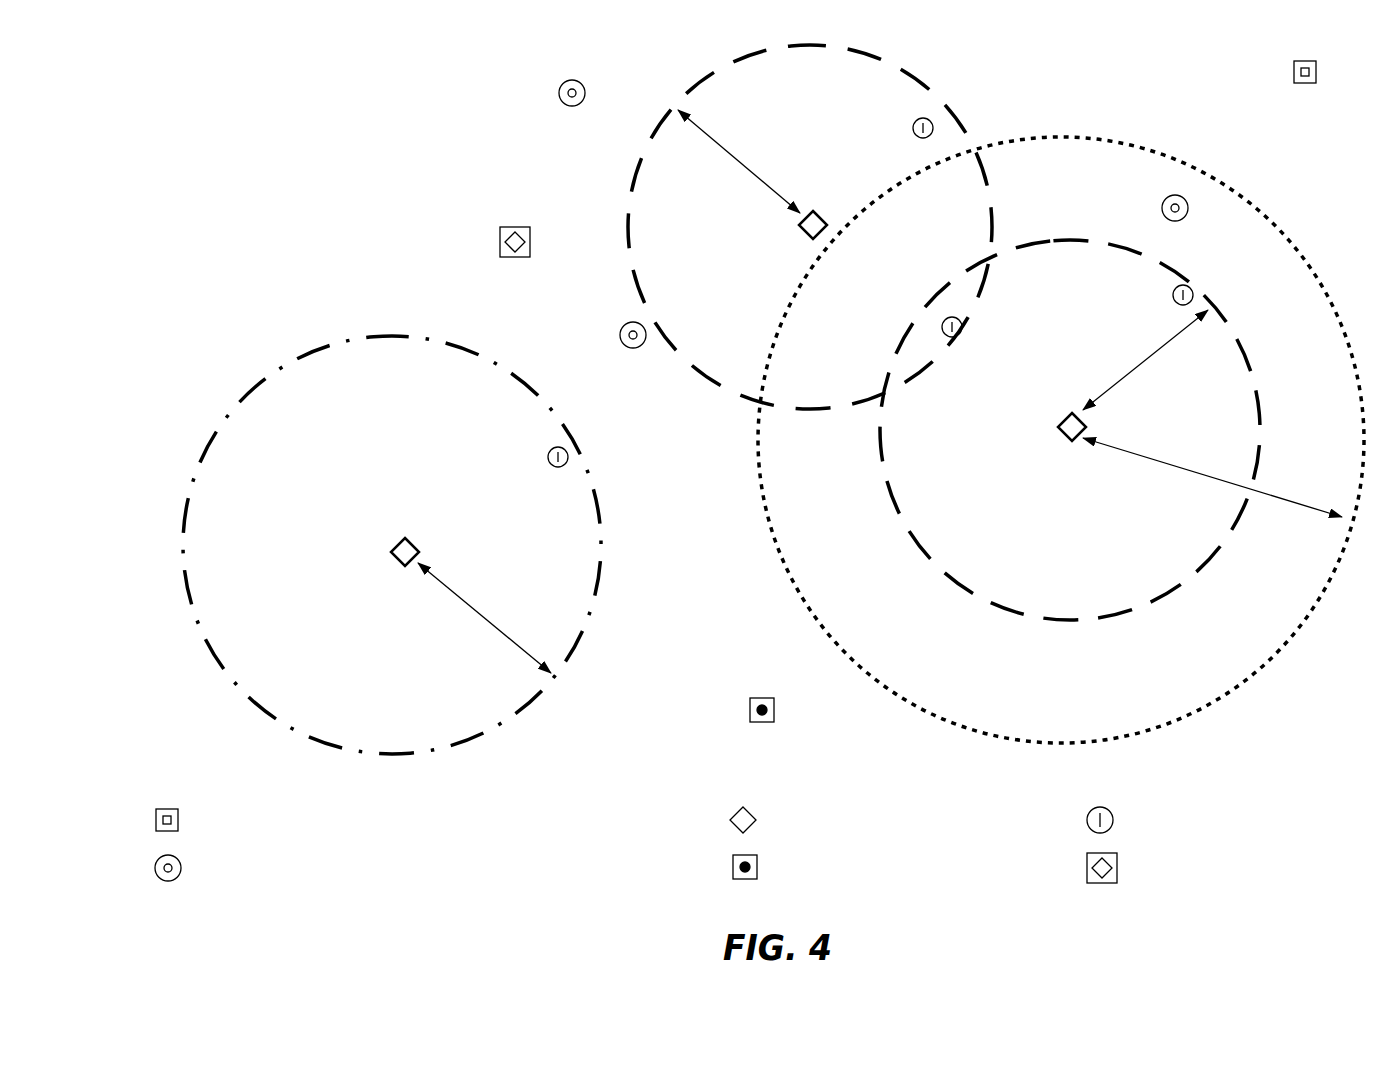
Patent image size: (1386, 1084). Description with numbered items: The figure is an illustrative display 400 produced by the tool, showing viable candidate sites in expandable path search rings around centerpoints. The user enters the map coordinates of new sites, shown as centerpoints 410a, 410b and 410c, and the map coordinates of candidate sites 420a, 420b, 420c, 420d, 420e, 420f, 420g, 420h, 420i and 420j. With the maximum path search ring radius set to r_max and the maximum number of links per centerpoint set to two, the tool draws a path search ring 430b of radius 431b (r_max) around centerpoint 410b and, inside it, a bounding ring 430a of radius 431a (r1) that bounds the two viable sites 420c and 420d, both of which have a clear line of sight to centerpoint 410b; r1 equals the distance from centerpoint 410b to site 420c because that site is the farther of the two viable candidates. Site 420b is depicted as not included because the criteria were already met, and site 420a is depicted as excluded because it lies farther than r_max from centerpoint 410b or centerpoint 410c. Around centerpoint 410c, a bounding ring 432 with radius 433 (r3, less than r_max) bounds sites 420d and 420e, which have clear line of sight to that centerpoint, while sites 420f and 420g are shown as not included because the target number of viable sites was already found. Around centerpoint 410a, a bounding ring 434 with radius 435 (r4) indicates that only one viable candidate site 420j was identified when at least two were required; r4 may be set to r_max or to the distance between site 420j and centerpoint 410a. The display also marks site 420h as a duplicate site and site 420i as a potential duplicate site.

The illustrative display 400 is at (202, 112).
The centerpoint 410a is at (390, 543).
The centerpoint 410b is at (1057, 420).
The centerpoint 410c is at (800, 217).
The candidate site 420a is at (1295, 65).
The candidate site 420b is at (1163, 205).
The candidate site 420c is at (1173, 292).
The candidate site 420d is at (940, 323).
The candidate site 420e is at (913, 127).
The candidate site 420f is at (558, 90).
The candidate site 420g is at (618, 335).
The duplicate site 420h is at (750, 703).
The potential duplicate site 420i is at (498, 237).
The viable candidate site 420j is at (548, 457).
The bounding ring 430a is at (892, 522).
The path search ring 430b is at (755, 480).
The radius 431a is at (1153, 370).
The radius 431b is at (1187, 490).
The bounding ring 432 is at (633, 158).
The radius 433 is at (752, 147).
The bounding ring 434 is at (233, 395).
The bounding ring radius 435 is at (468, 622).